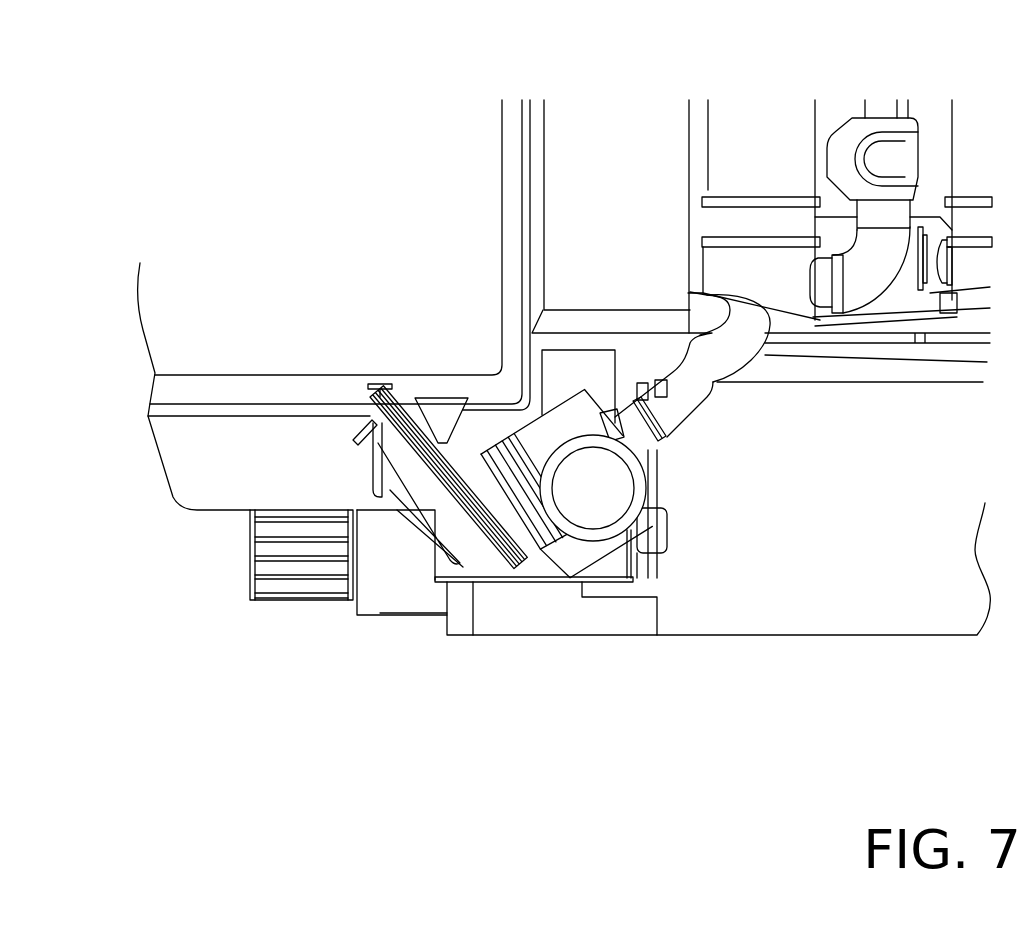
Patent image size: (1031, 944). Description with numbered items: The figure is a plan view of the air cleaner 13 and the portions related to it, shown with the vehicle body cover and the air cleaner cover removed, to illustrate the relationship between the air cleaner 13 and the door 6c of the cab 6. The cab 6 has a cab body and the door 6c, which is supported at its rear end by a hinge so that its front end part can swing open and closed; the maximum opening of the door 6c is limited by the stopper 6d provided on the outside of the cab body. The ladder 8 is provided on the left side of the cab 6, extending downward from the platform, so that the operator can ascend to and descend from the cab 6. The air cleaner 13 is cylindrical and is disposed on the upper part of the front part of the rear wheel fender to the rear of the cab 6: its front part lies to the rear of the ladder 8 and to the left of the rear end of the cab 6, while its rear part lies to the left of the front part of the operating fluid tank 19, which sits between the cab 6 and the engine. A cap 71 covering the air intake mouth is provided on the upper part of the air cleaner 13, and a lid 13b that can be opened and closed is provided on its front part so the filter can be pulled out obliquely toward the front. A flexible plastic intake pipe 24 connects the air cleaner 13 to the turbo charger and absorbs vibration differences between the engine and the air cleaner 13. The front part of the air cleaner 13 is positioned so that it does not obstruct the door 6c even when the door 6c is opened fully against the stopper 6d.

The cab 6 is at (460, 180).
The door 6c is at (435, 537).
The stopper 6d is at (437, 417).
The ladder 8 is at (283, 601).
The air cleaner 13 is at (606, 394).
The lid 13b is at (495, 547).
The operating fluid tank 19 is at (640, 145).
The intake pipe 24 is at (680, 405).
The cap 71 is at (590, 497).